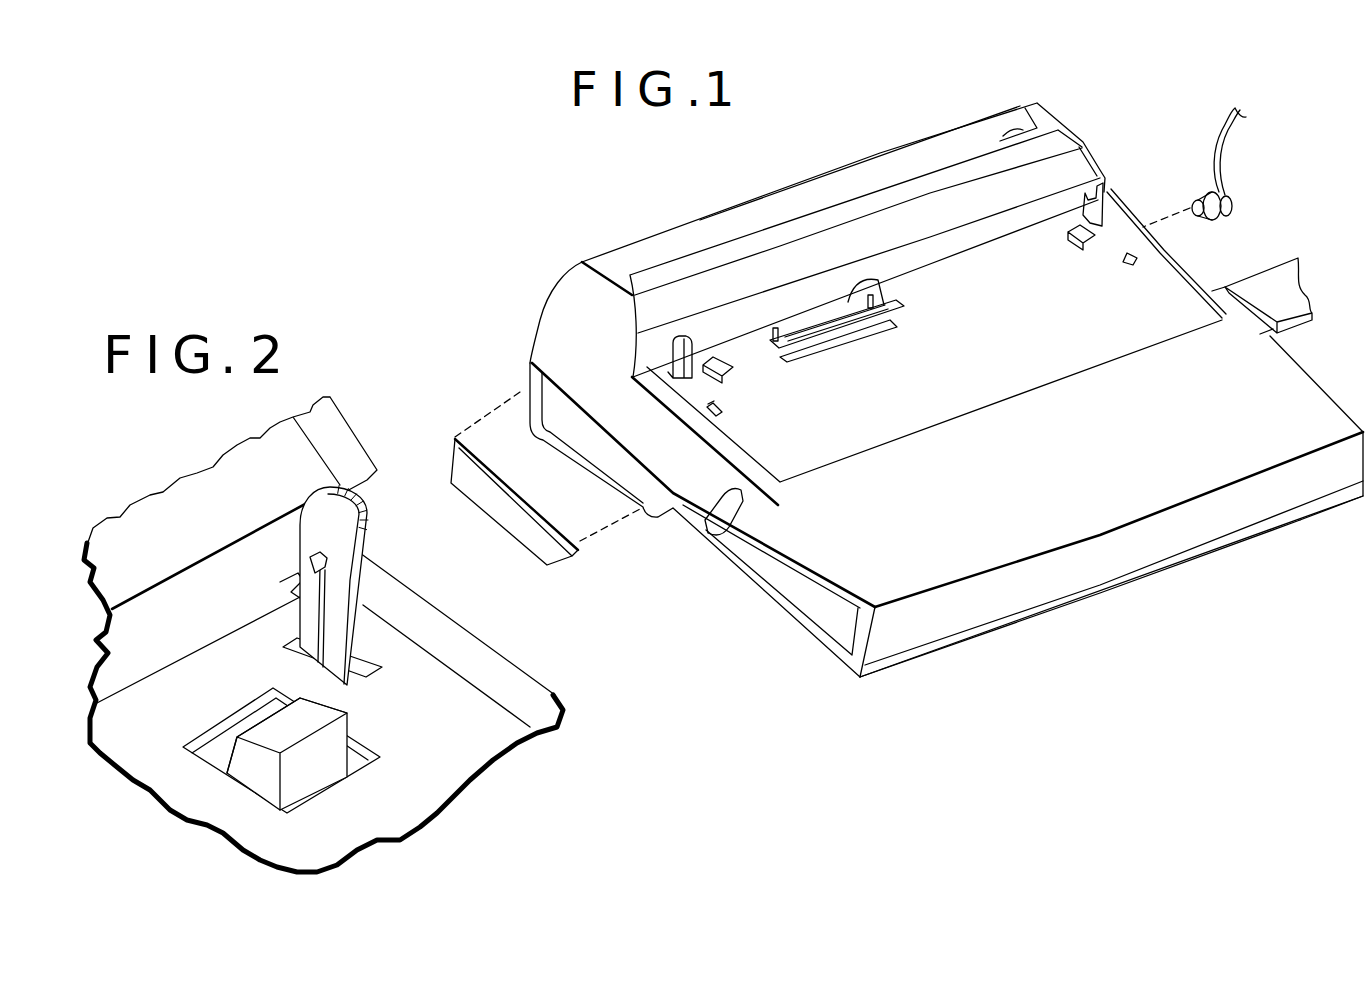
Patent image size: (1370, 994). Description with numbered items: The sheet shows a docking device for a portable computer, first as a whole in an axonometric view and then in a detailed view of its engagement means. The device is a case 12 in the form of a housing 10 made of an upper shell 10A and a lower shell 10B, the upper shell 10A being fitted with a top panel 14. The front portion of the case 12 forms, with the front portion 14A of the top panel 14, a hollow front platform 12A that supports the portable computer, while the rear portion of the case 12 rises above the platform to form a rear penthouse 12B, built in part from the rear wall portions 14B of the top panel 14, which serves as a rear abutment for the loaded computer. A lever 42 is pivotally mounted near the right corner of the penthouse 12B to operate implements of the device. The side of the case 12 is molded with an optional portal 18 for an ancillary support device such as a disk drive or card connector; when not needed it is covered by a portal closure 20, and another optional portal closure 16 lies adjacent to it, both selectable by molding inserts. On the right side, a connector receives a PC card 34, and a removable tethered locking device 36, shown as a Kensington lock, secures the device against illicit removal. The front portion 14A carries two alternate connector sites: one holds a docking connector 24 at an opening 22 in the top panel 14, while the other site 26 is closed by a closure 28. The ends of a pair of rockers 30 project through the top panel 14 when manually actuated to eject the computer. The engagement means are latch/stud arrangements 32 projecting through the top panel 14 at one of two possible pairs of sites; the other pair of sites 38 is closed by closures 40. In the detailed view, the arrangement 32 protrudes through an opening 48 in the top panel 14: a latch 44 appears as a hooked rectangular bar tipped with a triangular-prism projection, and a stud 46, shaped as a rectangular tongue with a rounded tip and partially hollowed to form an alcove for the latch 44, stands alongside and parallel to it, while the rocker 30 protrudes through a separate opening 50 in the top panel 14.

In FIG. 1, the housing 10 is at (1250, 560).
In FIG. 1, the upper shell 10A is at (1120, 563).
In FIG. 2, the upper shell 10A is at (543, 677).
In FIG. 1, the lower shell 10B is at (955, 643).
In FIG. 1, the case 12 is at (557, 268).
In FIG. 1, the front platform 12A is at (1314, 447).
In FIG. 1, the rear penthouse 12B is at (833, 171).
In FIG. 1, the top panel 14 is at (848, 440).
In FIG. 2, the top panel 14 is at (217, 797).
In FIG. 1, the front portion of top panel 14A is at (732, 542).
In FIG. 1, the rear wall portions of top panel 14B is at (970, 235).
In FIG. 2, the rear wall portions of top panel 14B is at (143, 520).
In FIG. 1, the portal closure 16 is at (835, 618).
In FIG. 1, the portal 18 is at (546, 405).
In FIG. 1, the portal closure 20 is at (547, 542).
In FIG. 1, the opening 22 is at (763, 338).
In FIG. 1, the docking connector 24 is at (883, 285).
In FIG. 1, the alternate connector site 26 is at (895, 318).
In FIG. 1, the closure 28 is at (822, 347).
In FIG. 1, the rocker 30 is at (717, 372).
In FIG. 2, the rocker 30 is at (267, 775).
In FIG. 1, the latch/stud arrangement 32 is at (681, 322).
In FIG. 2, the latch/stud arrangement 32 is at (378, 585).
In FIG. 1, the PC card 34 is at (1270, 285).
In FIG. 1, the locking device 36 is at (1232, 204).
In FIG. 1, the engagement site 38 is at (714, 414).
In FIG. 1, the closure 40 is at (720, 412).
In FIG. 1, the lever 42 is at (1003, 123).
In FIG. 2, the latch 44 is at (303, 575).
In FIG. 2, the stud 46 is at (337, 523).
In FIG. 2, the opening 48 is at (387, 687).
In FIG. 2, the opening 50 is at (220, 718).